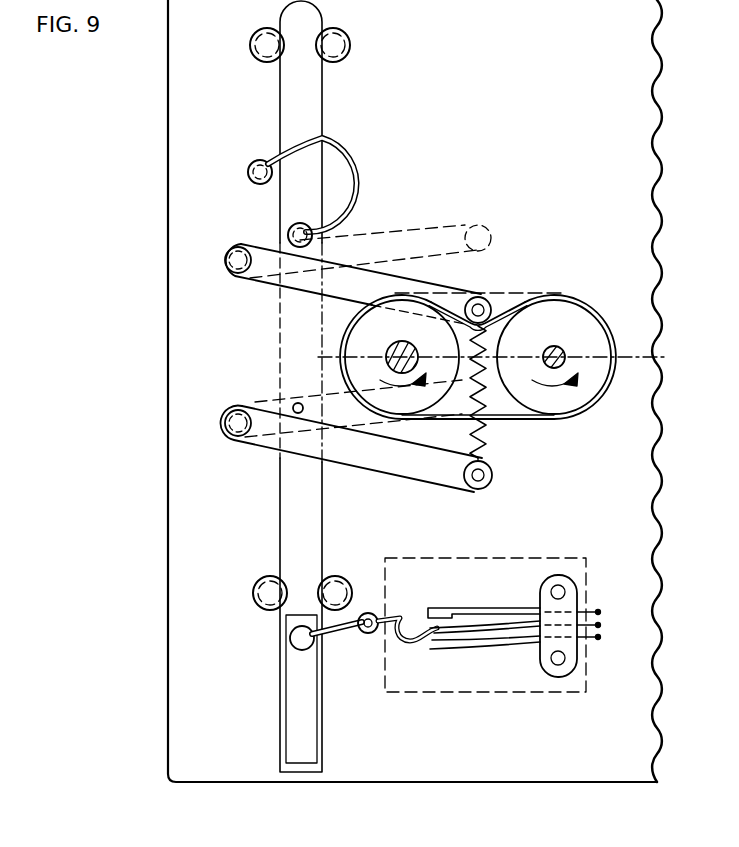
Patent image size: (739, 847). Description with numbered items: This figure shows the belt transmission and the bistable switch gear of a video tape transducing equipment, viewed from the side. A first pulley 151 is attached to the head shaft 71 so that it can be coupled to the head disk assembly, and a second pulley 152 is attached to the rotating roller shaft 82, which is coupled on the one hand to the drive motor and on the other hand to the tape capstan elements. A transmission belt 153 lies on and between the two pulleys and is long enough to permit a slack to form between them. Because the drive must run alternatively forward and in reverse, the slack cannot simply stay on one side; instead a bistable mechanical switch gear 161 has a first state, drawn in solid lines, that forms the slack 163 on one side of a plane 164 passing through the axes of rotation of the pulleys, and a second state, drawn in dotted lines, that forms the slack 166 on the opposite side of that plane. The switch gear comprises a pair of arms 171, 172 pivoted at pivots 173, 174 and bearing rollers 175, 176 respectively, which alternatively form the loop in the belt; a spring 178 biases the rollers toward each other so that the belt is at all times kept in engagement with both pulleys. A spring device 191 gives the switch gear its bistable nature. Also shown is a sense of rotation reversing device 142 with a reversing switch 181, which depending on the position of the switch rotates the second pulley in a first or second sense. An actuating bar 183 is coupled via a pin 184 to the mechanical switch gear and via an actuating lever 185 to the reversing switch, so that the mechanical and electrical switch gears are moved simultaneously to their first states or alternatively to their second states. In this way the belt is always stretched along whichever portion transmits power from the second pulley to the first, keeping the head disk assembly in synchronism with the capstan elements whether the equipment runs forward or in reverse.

The head shaft 71 is at (392, 344).
The rotating roller shaft 82 is at (553, 347).
The forward-reverse switch 142 is at (531, 692).
The first pulley 151 is at (420, 413).
The second pulley 152 is at (572, 413).
The transmission belt 153 is at (518, 423).
The bistable mechanical switch gear 161 is at (296, 297).
The slack 163 is at (506, 296).
The plane 164 is at (661, 360).
The slack 166 is at (500, 400).
The arm 171 is at (350, 266).
The arm 172 is at (387, 468).
The pivot 173 is at (235, 247).
The pivot 174 is at (232, 437).
The roller 175 is at (484, 296).
The roller 176 is at (481, 492).
The spring 178 is at (494, 480).
The reversing switch 181 is at (512, 608).
The actuating bar 183 is at (286, 536).
The pin 184 is at (294, 403).
The actuating lever 185 is at (337, 632).
The spring device 191 is at (332, 138).